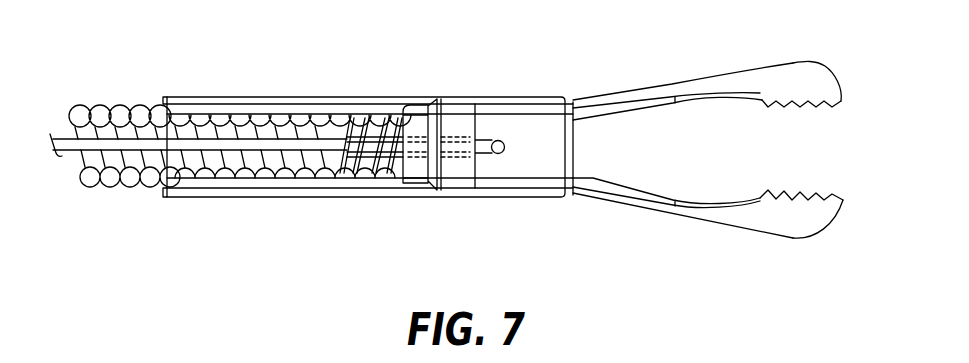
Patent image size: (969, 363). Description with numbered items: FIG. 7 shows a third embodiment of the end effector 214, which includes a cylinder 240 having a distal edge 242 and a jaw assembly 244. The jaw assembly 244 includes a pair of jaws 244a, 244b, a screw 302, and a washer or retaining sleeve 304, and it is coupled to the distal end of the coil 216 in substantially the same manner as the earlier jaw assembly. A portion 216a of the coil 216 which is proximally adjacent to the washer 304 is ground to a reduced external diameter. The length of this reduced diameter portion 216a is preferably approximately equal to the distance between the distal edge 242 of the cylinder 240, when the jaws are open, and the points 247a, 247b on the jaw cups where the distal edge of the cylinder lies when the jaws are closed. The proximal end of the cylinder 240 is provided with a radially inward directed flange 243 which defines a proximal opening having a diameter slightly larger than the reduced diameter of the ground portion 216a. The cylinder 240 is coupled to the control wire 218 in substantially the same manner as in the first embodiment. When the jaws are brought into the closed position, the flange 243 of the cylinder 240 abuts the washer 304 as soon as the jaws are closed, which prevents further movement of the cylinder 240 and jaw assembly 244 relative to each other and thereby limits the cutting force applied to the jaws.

The end effector 214 is at (703, 155).
The coil 216 is at (82, 112).
The reduced diameter portion of the coil 216a is at (270, 181).
The control wire 218 is at (93, 146).
The cylinder 240 is at (218, 99).
The distal edge 242 is at (577, 157).
The flange 243 is at (163, 112).
The jaw assembly 244 is at (633, 68).
The jaw 244a is at (737, 81).
The jaw 244b is at (702, 210).
The point on jaw cup 247a is at (796, 62).
The point on jaw cup 247b is at (810, 240).
The screw 302 is at (371, 135).
The washer 304 is at (404, 184).